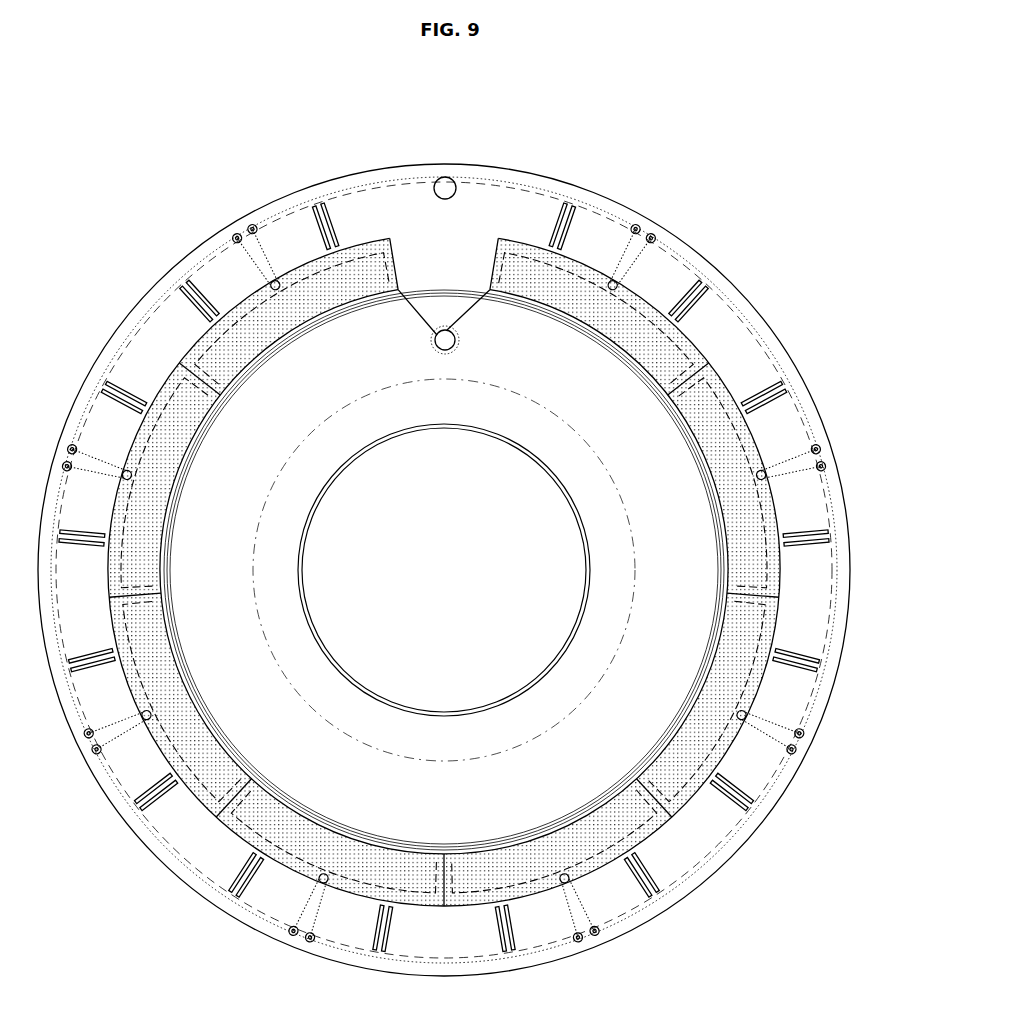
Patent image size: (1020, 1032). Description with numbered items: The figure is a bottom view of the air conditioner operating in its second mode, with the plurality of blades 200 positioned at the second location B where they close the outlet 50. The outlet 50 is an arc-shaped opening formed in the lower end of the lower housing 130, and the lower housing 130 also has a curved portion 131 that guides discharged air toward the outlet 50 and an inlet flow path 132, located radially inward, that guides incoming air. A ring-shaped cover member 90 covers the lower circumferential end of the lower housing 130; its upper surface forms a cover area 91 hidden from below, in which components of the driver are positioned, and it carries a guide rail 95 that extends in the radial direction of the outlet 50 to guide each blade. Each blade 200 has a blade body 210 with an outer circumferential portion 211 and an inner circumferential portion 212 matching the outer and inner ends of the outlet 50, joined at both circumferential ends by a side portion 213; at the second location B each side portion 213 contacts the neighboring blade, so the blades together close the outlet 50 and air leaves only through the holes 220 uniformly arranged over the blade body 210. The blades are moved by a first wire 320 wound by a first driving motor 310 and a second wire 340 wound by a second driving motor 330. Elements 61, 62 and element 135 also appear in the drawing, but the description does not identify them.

The outlet 50 is at (722, 445).
The first protrusion 61 is at (718, 617).
The second protrusion 62 is at (755, 510).
The cover member 90 is at (562, 182).
The cover area 91 is at (660, 230).
The guide rail 95 is at (700, 298).
The lower housing 130 is at (362, 840).
The curved portion 131 is at (553, 340).
The inlet flow path 132 is at (522, 630).
The fastening portion 135 is at (482, 218).
The blades 200 is at (297, 258).
The blade body 210 is at (260, 302).
The outer circumferential portion 211 is at (197, 340).
The inner circumferential portion 212 is at (247, 367).
The side portion 213 is at (190, 388).
The holes 220 is at (257, 303).
The first driving motor 310 is at (445, 177).
The first wire 320 is at (362, 172).
The second driving motor 330 is at (456, 342).
The second wire 340 is at (418, 313).